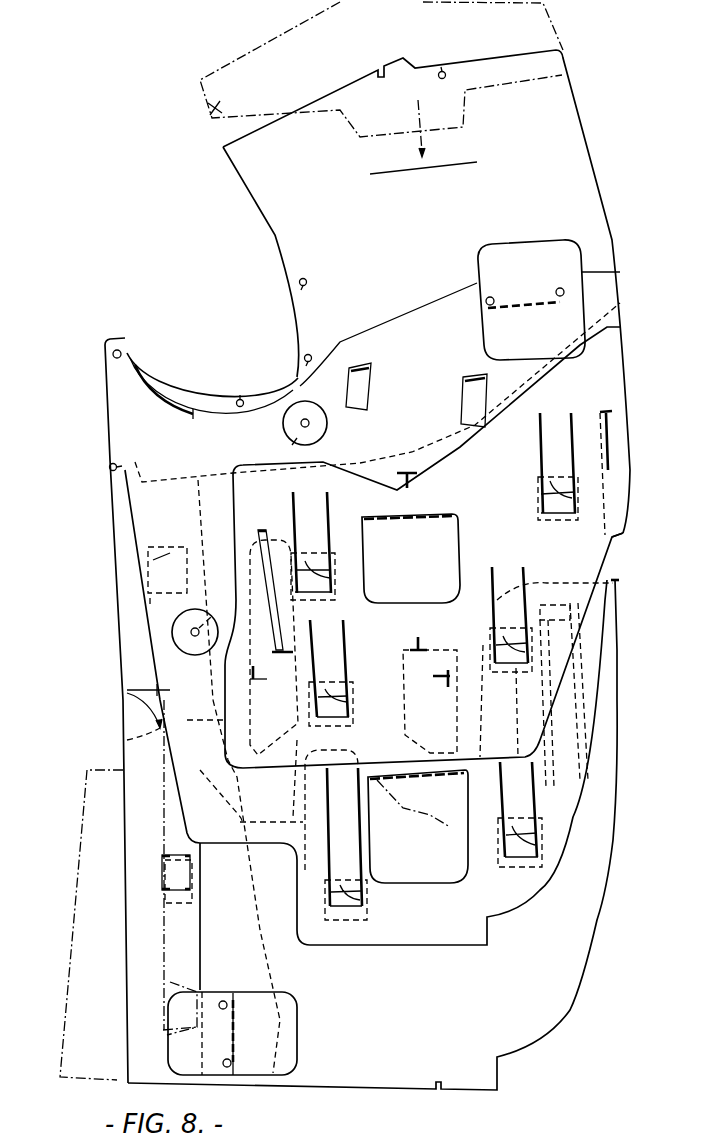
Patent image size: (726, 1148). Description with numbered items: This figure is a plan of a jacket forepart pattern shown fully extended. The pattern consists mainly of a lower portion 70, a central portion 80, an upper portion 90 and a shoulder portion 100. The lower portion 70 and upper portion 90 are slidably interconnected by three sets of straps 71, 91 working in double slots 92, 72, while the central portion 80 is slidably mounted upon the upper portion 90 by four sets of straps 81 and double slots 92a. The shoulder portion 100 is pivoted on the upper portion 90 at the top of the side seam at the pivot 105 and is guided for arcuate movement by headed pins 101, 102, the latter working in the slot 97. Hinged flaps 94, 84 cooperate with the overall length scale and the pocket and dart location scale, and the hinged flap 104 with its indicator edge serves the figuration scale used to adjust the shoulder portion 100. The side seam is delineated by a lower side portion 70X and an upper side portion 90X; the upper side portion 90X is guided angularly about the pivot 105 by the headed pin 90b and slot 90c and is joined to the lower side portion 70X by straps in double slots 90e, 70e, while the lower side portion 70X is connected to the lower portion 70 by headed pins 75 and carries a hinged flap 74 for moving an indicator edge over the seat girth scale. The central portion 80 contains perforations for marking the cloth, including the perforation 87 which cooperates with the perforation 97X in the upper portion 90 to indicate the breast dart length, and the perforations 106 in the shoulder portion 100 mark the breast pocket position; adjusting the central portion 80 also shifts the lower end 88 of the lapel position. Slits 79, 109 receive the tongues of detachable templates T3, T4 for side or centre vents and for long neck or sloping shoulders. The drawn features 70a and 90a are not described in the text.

The shoulder portion 100 is at (376, 236).
The detachable template T4 is at (203, 118).
The slit 109 is at (447, 165).
The hinged flap 104 is at (543, 342).
The headed pin 101 is at (556, 291).
The pivot 105 is at (128, 352).
The headed pin 102 is at (301, 418).
The slot 97 is at (300, 427).
The perforations 106 is at (430, 366).
The perforation 97X is at (408, 470).
The central portion 80 is at (489, 482).
The lower end of the lapel position 88 is at (616, 540).
The hinged flap 84 is at (416, 576).
The straps 81 is at (539, 452).
The double slots 92a is at (546, 498).
The perforation 87 is at (420, 640).
The double slot 90e is at (170, 560).
The slot 90c is at (152, 605).
The headed pin 90b is at (190, 632).
The upper side portion 90X is at (122, 527).
The upper portion 90 is at (176, 454).
The tab 70a is at (160, 681).
The double slot 92 is at (567, 620).
The strap 71 is at (575, 720).
The straps 91 is at (331, 838).
The double slots 72 is at (530, 836).
The hinged flap 94 is at (420, 870).
The small block 90a is at (172, 872).
The double slot 70e is at (175, 895).
The lower side portion 70X is at (147, 978).
The detachable template T3 is at (90, 826).
The lower portion 70 is at (450, 1044).
The hinged flap 74 is at (271, 1047).
The headed pins 75 is at (223, 1000).
The slit 79 is at (168, 1008).